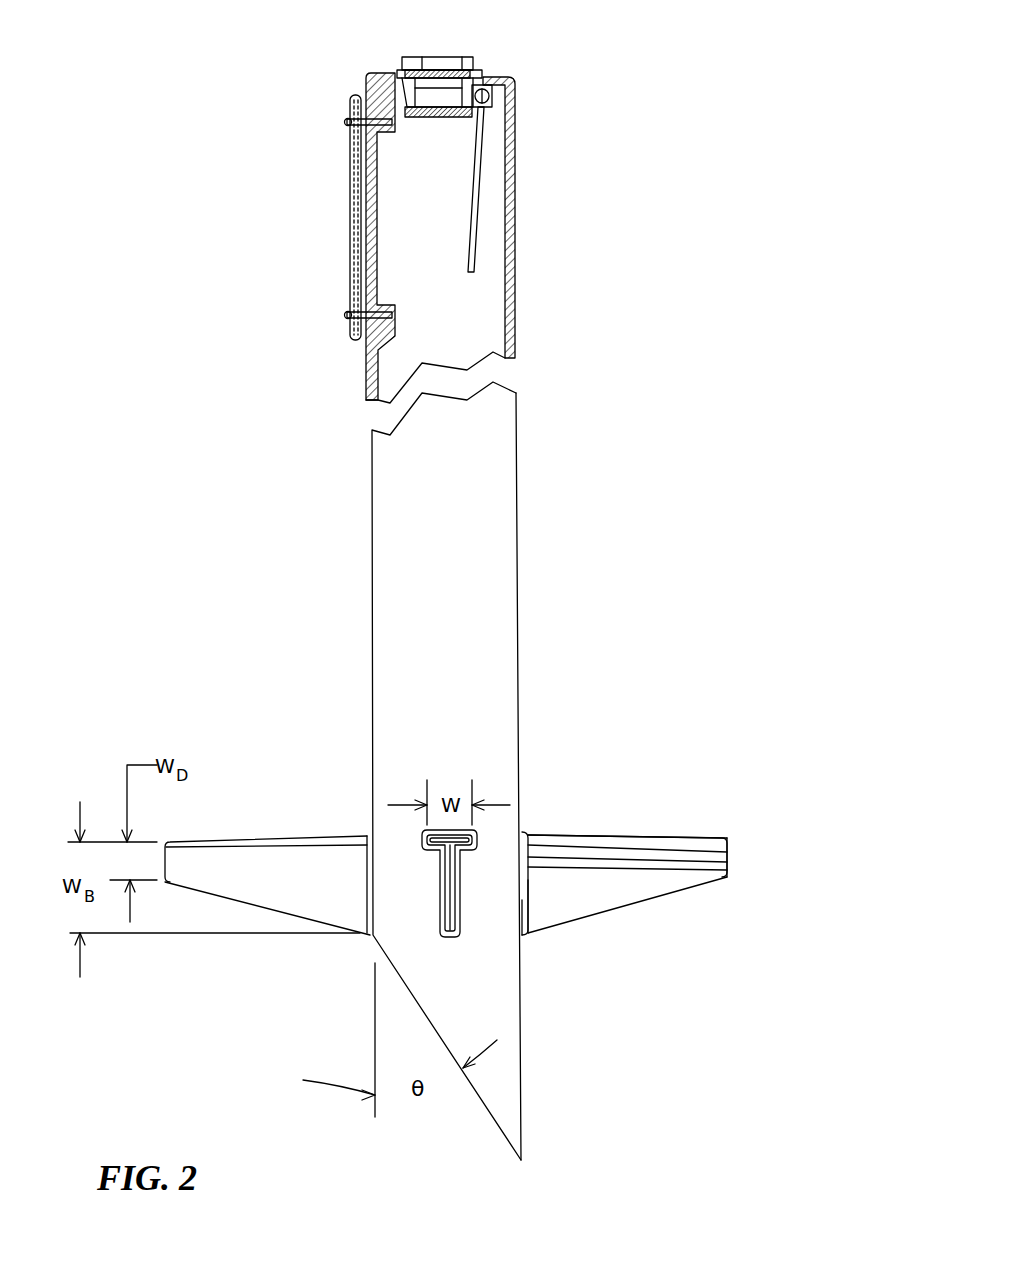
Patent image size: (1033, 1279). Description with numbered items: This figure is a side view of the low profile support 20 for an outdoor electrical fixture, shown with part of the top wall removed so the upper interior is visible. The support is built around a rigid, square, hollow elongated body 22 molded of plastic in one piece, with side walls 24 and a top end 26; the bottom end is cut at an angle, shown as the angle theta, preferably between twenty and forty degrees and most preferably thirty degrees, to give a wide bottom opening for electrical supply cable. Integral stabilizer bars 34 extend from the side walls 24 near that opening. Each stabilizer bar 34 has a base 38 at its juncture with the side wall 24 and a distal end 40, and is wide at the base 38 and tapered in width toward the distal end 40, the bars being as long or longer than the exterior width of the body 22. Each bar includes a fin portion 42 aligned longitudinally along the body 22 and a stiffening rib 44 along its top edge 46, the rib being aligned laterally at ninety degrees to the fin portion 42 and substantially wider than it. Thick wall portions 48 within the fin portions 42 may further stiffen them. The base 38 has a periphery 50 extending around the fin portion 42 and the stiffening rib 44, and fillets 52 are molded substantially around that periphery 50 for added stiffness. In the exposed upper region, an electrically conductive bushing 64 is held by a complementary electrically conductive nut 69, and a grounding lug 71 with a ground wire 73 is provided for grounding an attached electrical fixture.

The low profile support 20 is at (213, 445).
The hollow elongated body 22 is at (517, 537).
The side walls 24 is at (612, 683).
The top end 26 is at (495, 75).
The stabilizer bars 34 is at (312, 835).
The base 38 is at (523, 907).
The distal end 40 is at (733, 872).
The fin portion 42 is at (255, 882).
The stiffening rib 44 is at (435, 842).
The top edge 46 is at (568, 833).
The thick wall portions 48 is at (717, 858).
The periphery 50 is at (452, 938).
The fillets 52 is at (528, 880).
The electrically conductive bushing 64 is at (412, 60).
The electrically conductive nut 69 is at (444, 97).
The grounding lug 71 is at (490, 93).
The ground wire 73 is at (473, 218).